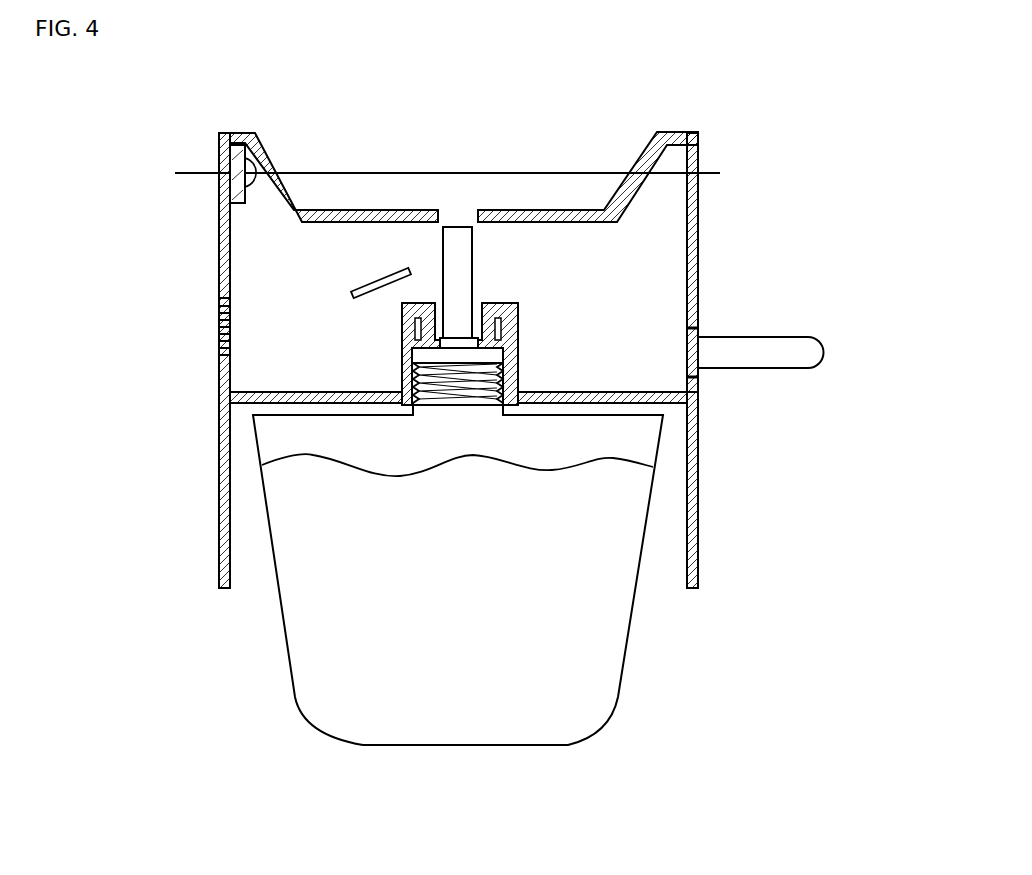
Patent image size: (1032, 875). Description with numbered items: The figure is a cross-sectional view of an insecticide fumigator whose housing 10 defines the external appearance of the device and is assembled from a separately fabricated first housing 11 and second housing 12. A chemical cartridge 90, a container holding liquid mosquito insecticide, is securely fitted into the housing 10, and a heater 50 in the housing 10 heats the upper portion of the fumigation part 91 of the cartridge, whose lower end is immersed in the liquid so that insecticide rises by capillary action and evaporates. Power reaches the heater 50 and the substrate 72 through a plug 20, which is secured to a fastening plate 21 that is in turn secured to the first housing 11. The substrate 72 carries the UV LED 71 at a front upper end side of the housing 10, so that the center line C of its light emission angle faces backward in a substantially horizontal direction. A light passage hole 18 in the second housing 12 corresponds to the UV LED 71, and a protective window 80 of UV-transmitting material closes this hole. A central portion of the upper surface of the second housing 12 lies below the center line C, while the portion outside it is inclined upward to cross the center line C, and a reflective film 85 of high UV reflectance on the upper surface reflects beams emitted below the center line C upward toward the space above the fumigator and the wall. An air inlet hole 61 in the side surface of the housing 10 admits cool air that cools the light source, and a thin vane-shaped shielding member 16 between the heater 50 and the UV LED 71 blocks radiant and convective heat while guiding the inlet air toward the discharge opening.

The housing 10 is at (875, 287).
The first housing 11 is at (698, 483).
The second housing 12 is at (698, 287).
The shielding member 16 is at (352, 298).
The light passage hole 18 is at (334, 134).
The plug 20 is at (760, 360).
The fastening plate 21 is at (698, 332).
The heater 50 is at (508, 301).
The air inlet hole 61 is at (222, 298).
The UV LED 71 is at (243, 176).
The substrate 72 is at (238, 160).
The protective window 80 is at (296, 186).
The reflective film 85 is at (636, 181).
The chemical cartridge 90 is at (446, 732).
The fumigation part 91 is at (458, 247).
The center line of the light emission angle C is at (457, 174).